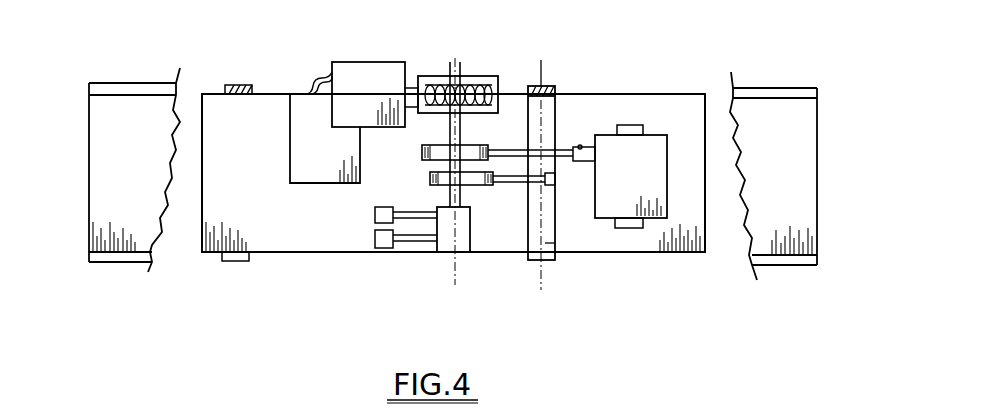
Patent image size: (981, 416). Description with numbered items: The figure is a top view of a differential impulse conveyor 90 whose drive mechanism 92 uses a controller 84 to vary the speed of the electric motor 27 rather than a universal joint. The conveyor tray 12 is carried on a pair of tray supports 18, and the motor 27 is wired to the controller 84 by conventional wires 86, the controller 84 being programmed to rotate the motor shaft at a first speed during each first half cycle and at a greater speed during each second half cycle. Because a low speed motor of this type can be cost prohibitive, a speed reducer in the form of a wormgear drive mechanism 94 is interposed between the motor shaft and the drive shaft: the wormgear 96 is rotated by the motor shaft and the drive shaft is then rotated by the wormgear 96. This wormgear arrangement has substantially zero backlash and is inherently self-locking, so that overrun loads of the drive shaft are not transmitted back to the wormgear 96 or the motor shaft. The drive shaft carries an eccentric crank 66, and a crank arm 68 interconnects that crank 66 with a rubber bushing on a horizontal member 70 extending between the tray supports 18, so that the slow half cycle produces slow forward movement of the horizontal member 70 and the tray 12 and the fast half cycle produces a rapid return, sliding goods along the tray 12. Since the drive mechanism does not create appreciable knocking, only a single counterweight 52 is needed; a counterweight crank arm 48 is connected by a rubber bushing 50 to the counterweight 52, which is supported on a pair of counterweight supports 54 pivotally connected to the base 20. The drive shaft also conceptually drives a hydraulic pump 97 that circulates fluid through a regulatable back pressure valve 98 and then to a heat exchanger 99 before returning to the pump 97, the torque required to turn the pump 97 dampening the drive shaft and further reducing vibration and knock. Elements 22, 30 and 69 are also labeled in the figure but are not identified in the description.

The tray 12 is at (113, 163).
The tray supports 18 is at (548, 86).
The base 20 is at (257, 218).
The mounting bracket 22 is at (234, 84).
The electric motor 27 is at (343, 97).
The worm gear housing 30 is at (417, 78).
The counterweight crank arm 48 is at (421, 148).
The rubber bushing 50 is at (582, 162).
The counterweight 52 is at (620, 165).
The counterweight supports 54 is at (631, 127).
The crank 66 is at (429, 173).
The crank arm 68 is at (509, 186).
The shaft bearing 69 is at (556, 182).
The horizontal member 70 is at (557, 244).
The controller 84 is at (325, 153).
The wires 86 is at (317, 80).
The differential impulse conveyor 90 is at (396, 272).
The drive mechanism 92 is at (427, 55).
The wormgear drive mechanism 94 is at (535, 60).
The wormgear 96 is at (462, 90).
The hydraulic pump 97 is at (447, 242).
The regulatable back pressure valve 98 is at (374, 213).
The heat exchanger 99 is at (383, 250).